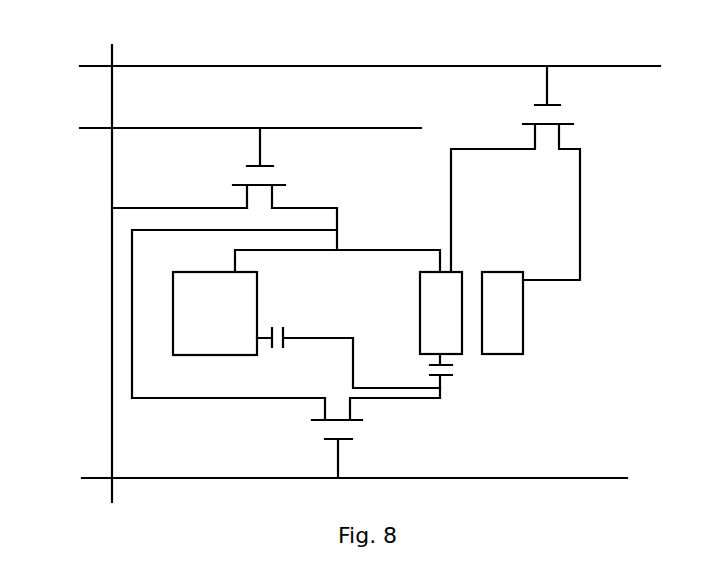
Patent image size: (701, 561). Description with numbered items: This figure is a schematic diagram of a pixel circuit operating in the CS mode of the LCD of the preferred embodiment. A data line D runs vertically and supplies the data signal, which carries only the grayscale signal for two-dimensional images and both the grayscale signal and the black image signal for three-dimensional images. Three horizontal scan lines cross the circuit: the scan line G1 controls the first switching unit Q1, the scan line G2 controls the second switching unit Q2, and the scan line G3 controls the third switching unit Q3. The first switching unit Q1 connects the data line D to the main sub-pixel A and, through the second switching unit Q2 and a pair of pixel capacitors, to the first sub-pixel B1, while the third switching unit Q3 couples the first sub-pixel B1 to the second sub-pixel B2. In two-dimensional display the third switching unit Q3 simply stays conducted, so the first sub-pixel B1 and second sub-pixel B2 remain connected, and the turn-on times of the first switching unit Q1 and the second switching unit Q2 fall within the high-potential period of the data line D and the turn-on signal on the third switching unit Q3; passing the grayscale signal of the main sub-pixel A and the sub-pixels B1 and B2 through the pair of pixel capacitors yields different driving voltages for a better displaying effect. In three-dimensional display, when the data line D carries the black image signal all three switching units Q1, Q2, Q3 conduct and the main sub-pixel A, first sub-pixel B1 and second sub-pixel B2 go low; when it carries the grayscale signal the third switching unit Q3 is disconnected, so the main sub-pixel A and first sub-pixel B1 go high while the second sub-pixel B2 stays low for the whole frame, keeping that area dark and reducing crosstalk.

The data line D is at (110, 261).
The scan line G1 is at (233, 129).
The scan line G2 is at (336, 479).
The scan line G3 is at (353, 67).
The first switching unit Q1 is at (269, 168).
The second switching unit Q2 is at (376, 438).
The third switching unit Q3 is at (524, 173).
The main sub-pixel A is at (215, 313).
The first sub-pixel B1 is at (441, 313).
The second sub-pixel B2 is at (502, 313).